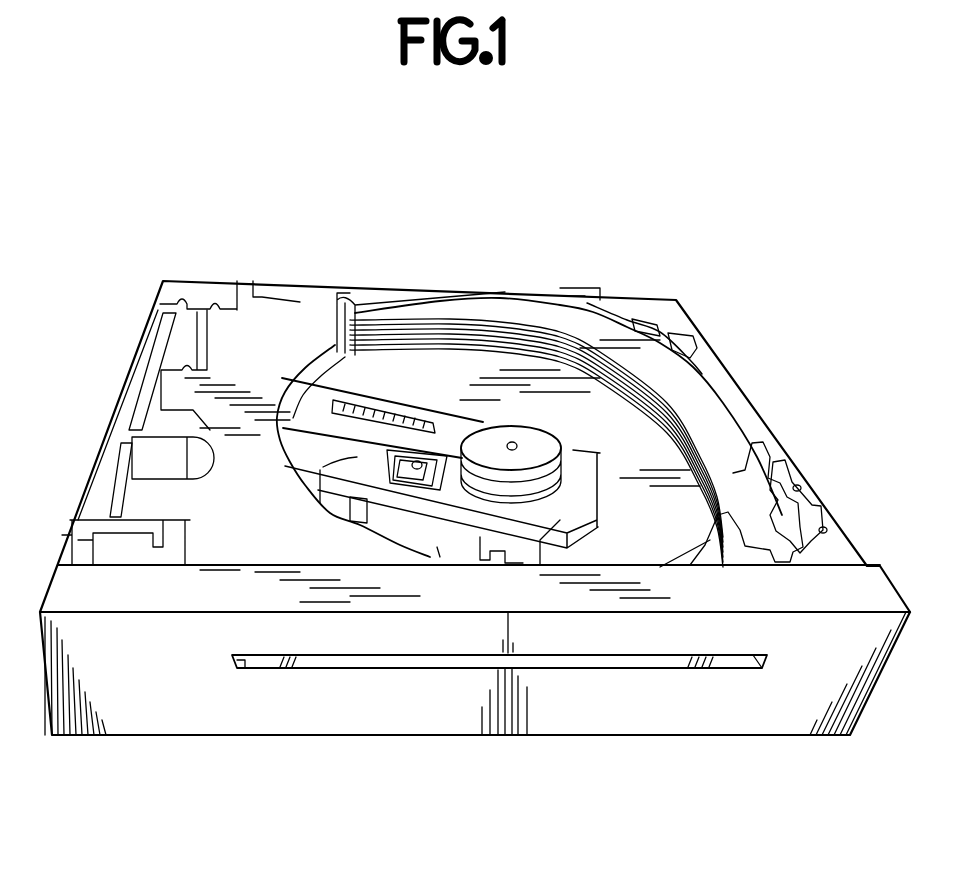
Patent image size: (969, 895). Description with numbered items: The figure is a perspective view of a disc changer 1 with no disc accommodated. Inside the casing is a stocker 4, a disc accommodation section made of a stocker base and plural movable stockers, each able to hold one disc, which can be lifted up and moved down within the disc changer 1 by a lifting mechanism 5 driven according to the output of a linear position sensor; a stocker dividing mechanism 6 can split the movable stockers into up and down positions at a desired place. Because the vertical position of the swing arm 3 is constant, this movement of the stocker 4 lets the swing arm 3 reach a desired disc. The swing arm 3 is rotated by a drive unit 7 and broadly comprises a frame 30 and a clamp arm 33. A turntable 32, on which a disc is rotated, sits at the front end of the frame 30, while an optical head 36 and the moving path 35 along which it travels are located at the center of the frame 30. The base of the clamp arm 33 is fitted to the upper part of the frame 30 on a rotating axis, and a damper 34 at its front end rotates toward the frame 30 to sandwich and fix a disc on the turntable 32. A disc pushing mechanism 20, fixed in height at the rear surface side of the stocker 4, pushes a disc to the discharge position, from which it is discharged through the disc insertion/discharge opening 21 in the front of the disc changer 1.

The disc changer 1 is at (604, 217).
The swing arm 3 is at (452, 351).
The stocker 4 is at (693, 397).
The lifting mechanism 5 is at (673, 316).
The stocker dividing mechanism 6 is at (388, 305).
The drive unit 7 is at (257, 352).
The disc pushing mechanism 20 is at (570, 288).
The disc insertion/discharge opening 21 is at (455, 670).
The frame 30 is at (577, 493).
The turntable 32 is at (573, 530).
The clamp arm 33 is at (437, 430).
The damper 34 is at (474, 414).
The moving path 35 is at (330, 458).
The optical head 36 is at (407, 473).